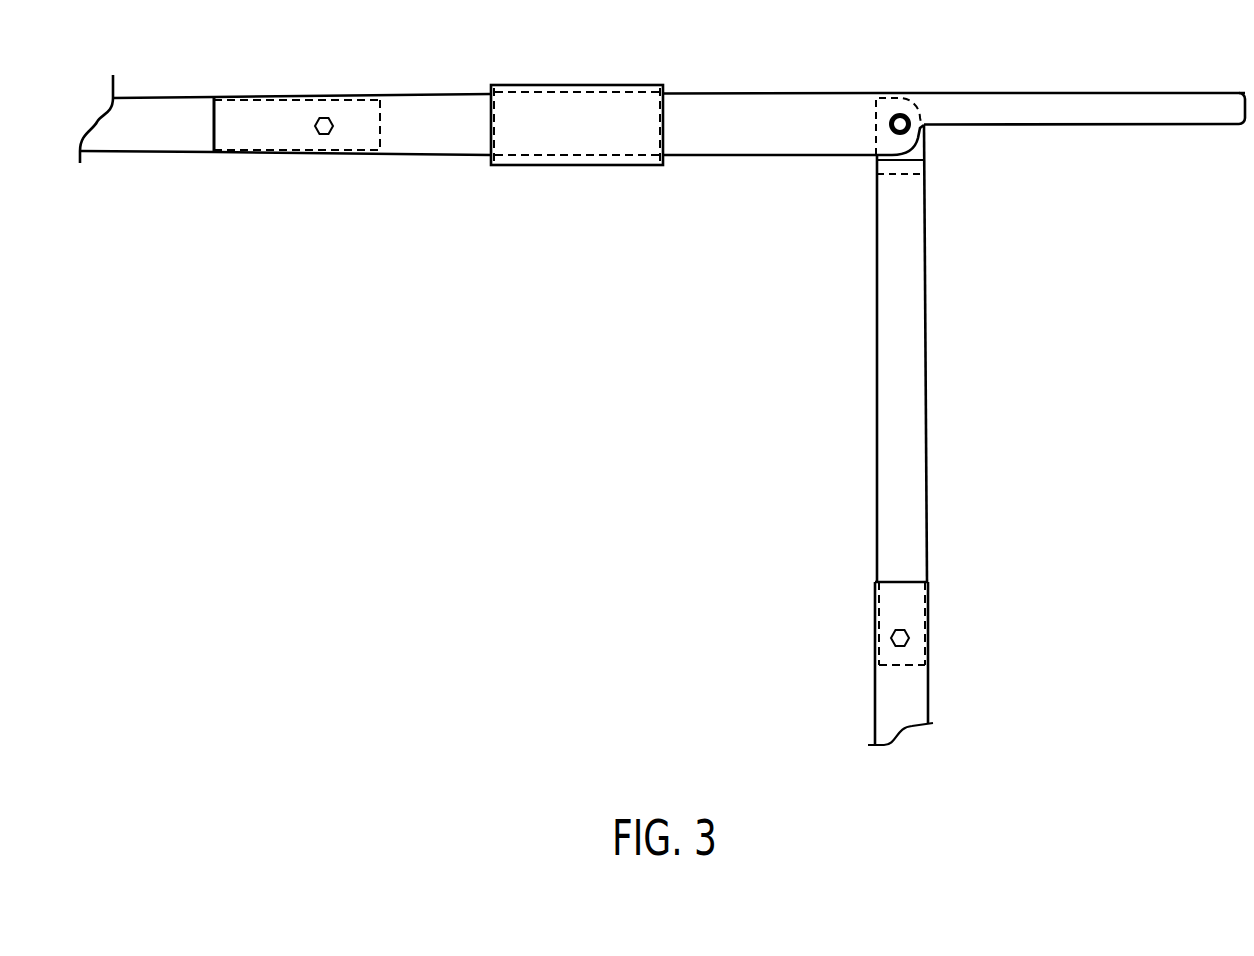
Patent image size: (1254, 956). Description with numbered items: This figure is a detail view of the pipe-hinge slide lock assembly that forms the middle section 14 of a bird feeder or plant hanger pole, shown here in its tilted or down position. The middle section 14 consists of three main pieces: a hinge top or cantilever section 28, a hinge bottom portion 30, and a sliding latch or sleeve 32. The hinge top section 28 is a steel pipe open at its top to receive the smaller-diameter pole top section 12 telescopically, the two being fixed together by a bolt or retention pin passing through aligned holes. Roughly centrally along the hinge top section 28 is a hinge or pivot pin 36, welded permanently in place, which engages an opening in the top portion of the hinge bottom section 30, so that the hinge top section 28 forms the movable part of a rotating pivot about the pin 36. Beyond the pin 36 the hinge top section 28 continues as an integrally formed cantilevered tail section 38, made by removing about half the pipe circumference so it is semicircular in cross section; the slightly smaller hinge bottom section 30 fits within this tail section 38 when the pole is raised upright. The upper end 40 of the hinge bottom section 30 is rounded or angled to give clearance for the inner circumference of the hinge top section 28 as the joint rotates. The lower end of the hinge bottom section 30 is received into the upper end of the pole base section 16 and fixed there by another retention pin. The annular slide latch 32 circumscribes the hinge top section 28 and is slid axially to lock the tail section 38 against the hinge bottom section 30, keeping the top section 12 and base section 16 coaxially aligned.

The top section 12 is at (140, 151).
The middle section 14 is at (1100, 277).
The base section 16 is at (875, 693).
The hinge top section 28 is at (757, 180).
The hinge bottom portion 30 is at (826, 286).
The sliding latch 32 is at (573, 85).
The pivot pin 36 is at (900, 113).
The cantilevered tail section 38 is at (1158, 107).
The upper end 40 is at (925, 148).